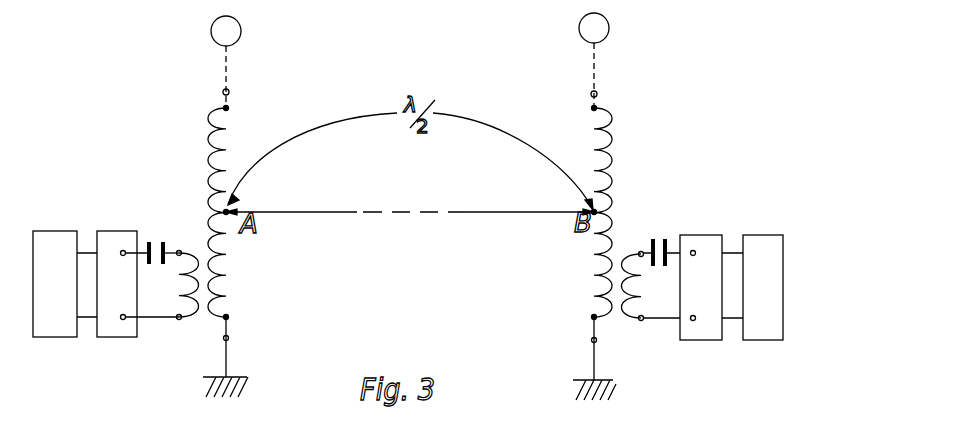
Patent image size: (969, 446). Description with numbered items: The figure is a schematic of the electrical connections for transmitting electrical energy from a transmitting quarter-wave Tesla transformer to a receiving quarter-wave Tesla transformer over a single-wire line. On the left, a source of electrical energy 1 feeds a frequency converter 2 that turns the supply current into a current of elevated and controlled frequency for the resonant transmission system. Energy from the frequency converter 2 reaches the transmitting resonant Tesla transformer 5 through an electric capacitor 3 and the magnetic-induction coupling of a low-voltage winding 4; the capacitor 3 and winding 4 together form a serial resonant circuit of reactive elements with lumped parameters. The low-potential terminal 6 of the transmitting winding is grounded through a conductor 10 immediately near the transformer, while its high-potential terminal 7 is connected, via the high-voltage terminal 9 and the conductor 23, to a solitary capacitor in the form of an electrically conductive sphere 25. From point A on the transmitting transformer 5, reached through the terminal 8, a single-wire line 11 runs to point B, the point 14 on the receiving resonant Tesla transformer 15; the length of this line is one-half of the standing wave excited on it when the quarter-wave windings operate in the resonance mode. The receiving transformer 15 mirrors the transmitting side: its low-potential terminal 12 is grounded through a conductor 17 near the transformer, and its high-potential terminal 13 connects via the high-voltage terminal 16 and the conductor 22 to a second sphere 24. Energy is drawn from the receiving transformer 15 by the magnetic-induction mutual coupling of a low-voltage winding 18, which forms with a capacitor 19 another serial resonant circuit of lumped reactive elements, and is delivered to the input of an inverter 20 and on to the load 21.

The source of electrical energy 1 is at (50, 229).
The frequency converter 2 is at (114, 229).
The electric capacitor 3 is at (160, 239).
The low-voltage winding 4 is at (188, 316).
The transmitting resonant Tesla transformer 5 is at (213, 262).
The low-potential terminal 6 is at (229, 318).
The high-potential terminal 7 is at (229, 108).
The terminal 8 is at (231, 209).
The high-voltage terminal 9 is at (230, 92).
The conductor 10 is at (227, 357).
The single-wire line 11 is at (318, 212).
The low-potential terminal 12 is at (593, 317).
The high-potential terminal 13 is at (591, 108).
The point 14 is at (588, 208).
The receiving resonant Tesla transformer 15 is at (592, 258).
The high-voltage terminal 16 is at (598, 94).
The conductor 17 is at (593, 357).
The low-voltage winding 18 is at (637, 295).
The capacitor 19 is at (658, 236).
The inverter 20 is at (701, 233).
The load 21 is at (763, 233).
The conductor 22 is at (592, 65).
The conductor 23 is at (229, 62).
The sphere 24 is at (579, 33).
The sphere 25 is at (243, 32).